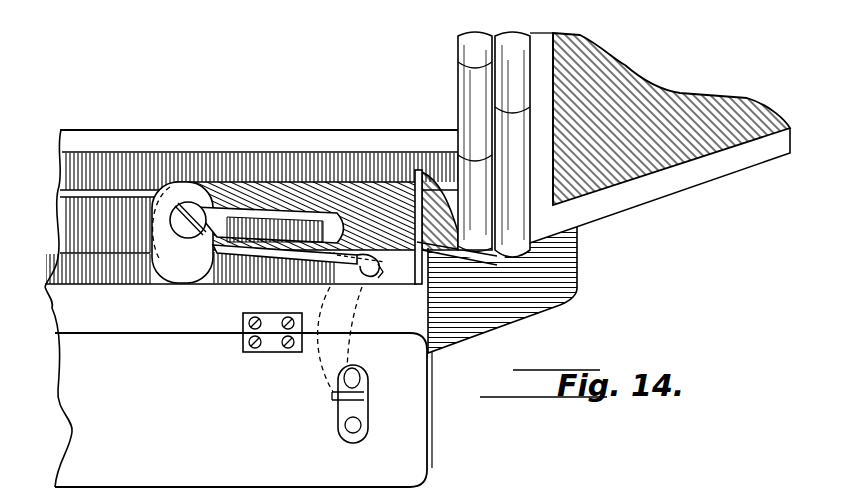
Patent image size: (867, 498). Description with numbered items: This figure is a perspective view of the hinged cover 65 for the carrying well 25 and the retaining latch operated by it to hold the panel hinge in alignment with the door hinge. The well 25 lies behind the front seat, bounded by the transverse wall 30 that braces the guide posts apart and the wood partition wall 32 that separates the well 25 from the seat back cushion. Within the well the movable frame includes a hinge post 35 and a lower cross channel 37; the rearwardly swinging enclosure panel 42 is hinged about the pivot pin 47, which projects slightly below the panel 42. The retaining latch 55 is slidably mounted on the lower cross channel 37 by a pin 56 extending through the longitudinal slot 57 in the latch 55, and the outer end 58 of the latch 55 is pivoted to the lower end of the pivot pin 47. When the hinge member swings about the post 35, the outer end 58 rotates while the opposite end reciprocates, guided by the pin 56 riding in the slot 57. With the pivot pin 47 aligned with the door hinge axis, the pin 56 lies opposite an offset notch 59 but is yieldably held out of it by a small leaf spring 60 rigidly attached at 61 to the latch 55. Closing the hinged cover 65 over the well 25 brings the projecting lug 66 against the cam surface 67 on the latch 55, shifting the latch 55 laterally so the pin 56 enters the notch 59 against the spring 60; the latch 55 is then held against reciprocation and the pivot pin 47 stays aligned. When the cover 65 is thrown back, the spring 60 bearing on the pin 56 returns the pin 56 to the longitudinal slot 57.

The well 25 is at (113, 187).
The transverse wall 30 is at (62, 305).
The partition wall 32 is at (70, 138).
The hinge post 35 is at (478, 35).
The lower cross channel 37 is at (118, 258).
The enclosure panel 42 is at (642, 100).
The pivot pin 47 is at (513, 37).
The retaining latch 55 is at (392, 203).
The pin 56 is at (187, 205).
The longitudinal slot 57 is at (213, 217).
The outer end of latch 58 is at (497, 257).
The offset notch 59 is at (173, 273).
The leaf spring 60 is at (165, 236).
The spring attachment point 61 is at (380, 268).
The hinged cover 65 is at (413, 438).
The projecting lug 66 is at (365, 392).
The cam surface 67 is at (335, 277).